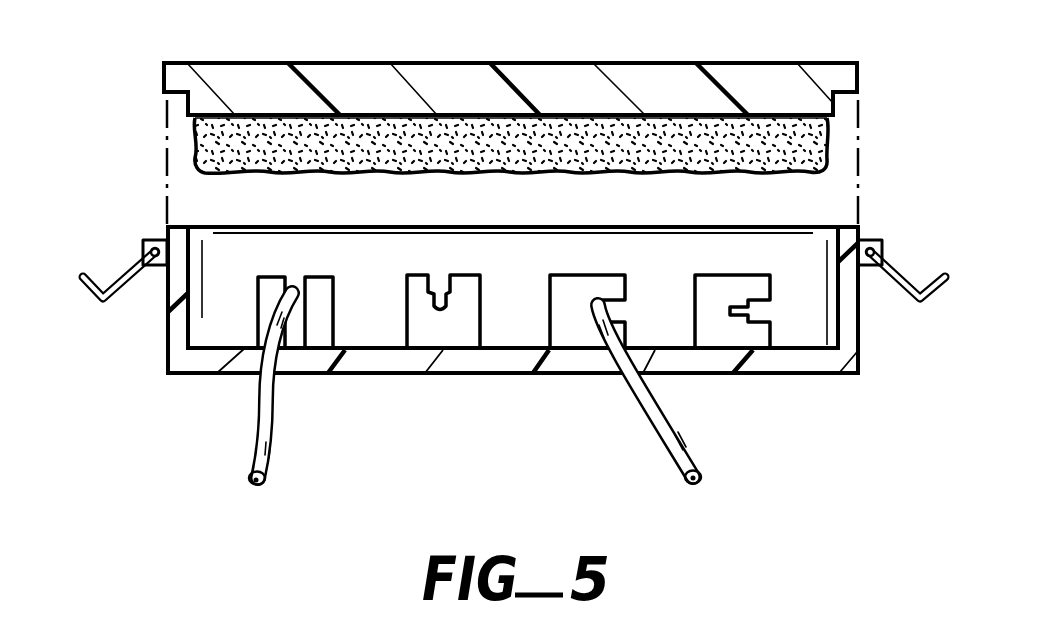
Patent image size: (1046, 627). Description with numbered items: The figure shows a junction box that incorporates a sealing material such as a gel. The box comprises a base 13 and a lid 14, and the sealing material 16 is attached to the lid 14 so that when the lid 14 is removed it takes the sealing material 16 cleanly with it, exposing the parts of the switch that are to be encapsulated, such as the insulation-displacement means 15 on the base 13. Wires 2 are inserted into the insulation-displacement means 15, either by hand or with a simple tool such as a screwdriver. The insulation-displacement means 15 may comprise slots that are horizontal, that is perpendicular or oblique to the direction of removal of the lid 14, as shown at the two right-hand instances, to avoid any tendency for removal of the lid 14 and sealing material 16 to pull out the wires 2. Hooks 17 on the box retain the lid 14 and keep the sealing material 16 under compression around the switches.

The wires 2 is at (272, 450).
The base 13 is at (527, 255).
The lid 14 is at (375, 87).
The insulation-displacement means 15 is at (317, 330).
The sealing material 16 is at (723, 143).
The hooks 17 is at (130, 295).